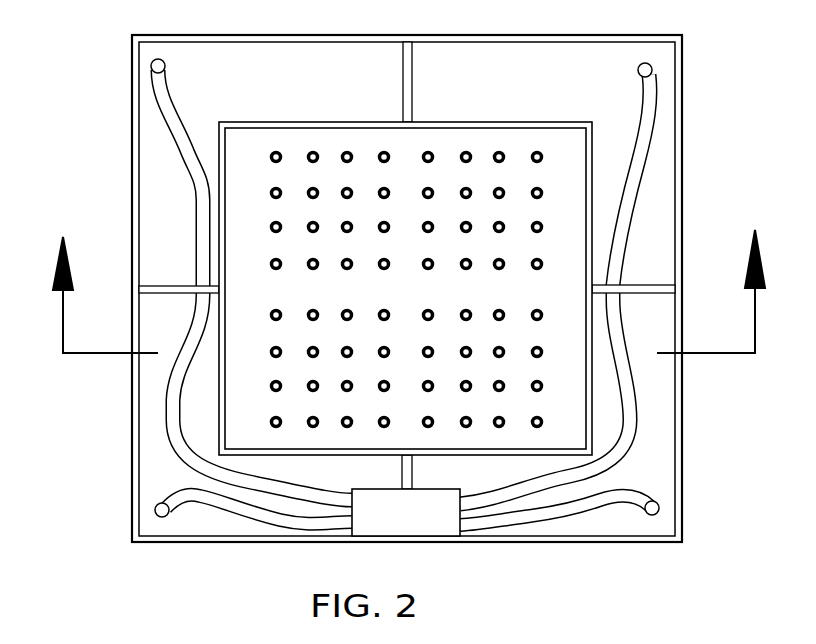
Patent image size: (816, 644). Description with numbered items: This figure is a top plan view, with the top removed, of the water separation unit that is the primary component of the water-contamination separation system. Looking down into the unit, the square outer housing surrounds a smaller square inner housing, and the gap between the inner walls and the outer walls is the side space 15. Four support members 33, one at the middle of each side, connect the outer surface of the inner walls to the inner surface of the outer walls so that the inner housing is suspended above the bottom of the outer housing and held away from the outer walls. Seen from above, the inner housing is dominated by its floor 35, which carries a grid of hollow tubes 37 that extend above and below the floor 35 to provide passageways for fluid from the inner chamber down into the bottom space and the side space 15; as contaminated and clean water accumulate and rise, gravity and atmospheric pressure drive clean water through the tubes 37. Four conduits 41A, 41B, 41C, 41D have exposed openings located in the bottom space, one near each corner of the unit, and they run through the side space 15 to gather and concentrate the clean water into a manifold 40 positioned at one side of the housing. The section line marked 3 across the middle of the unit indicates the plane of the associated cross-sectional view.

The side space 15 is at (340, 97).
The support members 33 is at (412, 70).
The floor 35 is at (405, 265).
The hollow tubes 37 is at (428, 150).
The manifold 40 is at (421, 522).
The conduit 41A is at (158, 505).
The conduit 41B is at (163, 60).
The conduit 41C is at (640, 67).
The conduit 41D is at (653, 503).
The section line 3- 3 is at (408, 284).